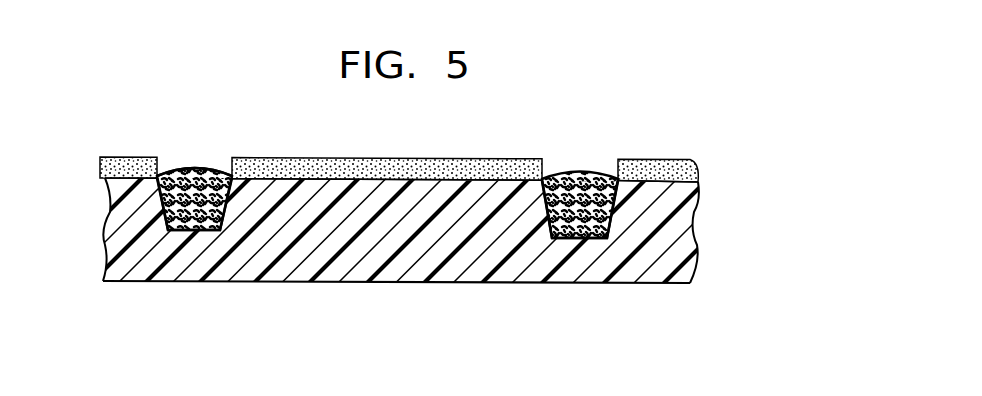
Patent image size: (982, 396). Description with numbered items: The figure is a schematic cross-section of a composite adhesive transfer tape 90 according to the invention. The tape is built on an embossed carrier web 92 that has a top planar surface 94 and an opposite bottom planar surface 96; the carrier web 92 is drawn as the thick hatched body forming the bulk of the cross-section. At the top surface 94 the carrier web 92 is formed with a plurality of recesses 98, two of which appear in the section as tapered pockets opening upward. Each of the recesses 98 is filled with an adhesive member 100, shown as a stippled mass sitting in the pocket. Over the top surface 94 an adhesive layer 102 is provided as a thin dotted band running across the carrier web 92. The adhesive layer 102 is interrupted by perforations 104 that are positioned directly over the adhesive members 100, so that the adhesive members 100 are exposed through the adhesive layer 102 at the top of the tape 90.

The composite adhesive tape 90 is at (668, 90).
The embossed carrier web 92 is at (655, 255).
The top planar surface 94 is at (690, 160).
The bottom planar surface 96 is at (430, 283).
The recesses 98 is at (162, 213).
The adhesive members 100 is at (185, 177).
The adhesive layer 102 is at (652, 167).
The perforations 104 is at (233, 165).